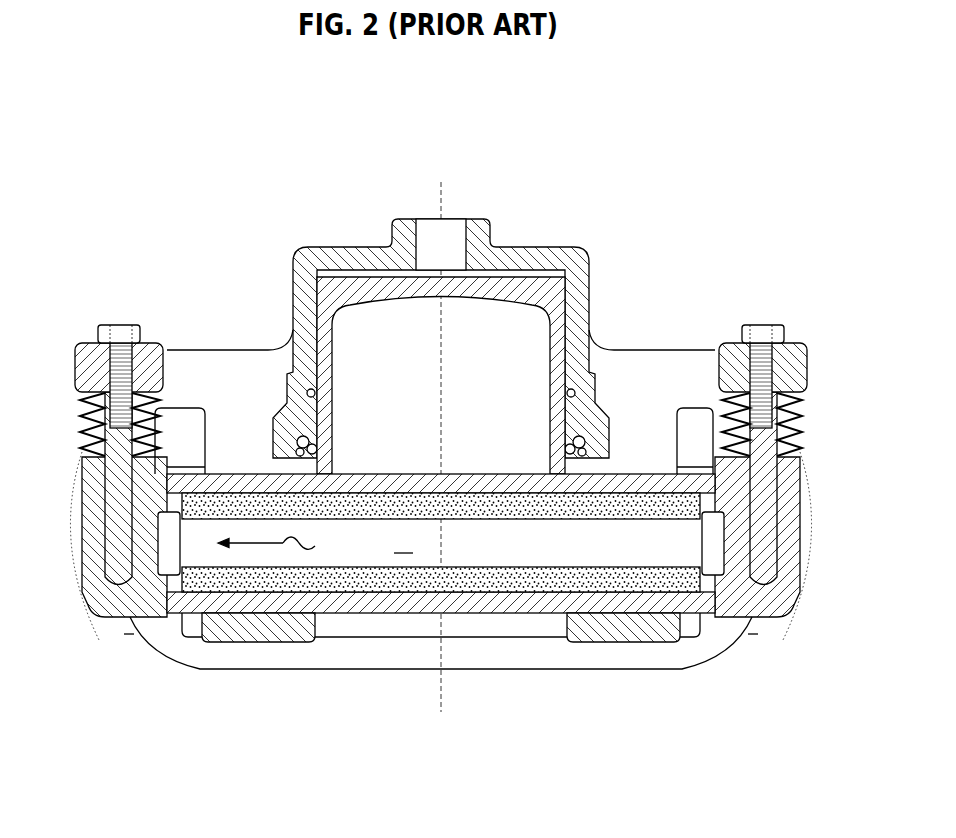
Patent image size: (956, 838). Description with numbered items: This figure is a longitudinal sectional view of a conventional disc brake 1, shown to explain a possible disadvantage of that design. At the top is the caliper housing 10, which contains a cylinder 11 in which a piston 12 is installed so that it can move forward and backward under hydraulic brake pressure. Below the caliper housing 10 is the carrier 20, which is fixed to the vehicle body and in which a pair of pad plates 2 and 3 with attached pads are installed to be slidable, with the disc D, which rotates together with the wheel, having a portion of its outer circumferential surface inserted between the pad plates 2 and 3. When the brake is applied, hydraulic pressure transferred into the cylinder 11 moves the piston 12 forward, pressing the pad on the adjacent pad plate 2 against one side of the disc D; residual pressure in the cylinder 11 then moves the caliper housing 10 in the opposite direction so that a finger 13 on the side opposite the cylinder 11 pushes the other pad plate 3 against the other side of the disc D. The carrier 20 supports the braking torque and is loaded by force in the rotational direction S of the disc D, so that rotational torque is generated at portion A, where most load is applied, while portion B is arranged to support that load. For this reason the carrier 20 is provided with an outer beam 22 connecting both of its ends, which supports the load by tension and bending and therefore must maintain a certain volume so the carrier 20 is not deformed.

The disc brake 1 is at (437, 438).
The pad plate 2 is at (357, 474).
The pad plate 3 is at (365, 603).
The caliper housing 10 is at (441, 319).
The cylinder 11 is at (514, 268).
The piston 12 is at (352, 293).
The finger 13 is at (265, 632).
The carrier 20 is at (117, 626).
The outer beam 22 is at (540, 640).
The rotational direction S is at (273, 548).
The disc D is at (403, 541).
The portion A is at (128, 635).
The portion B is at (752, 635).